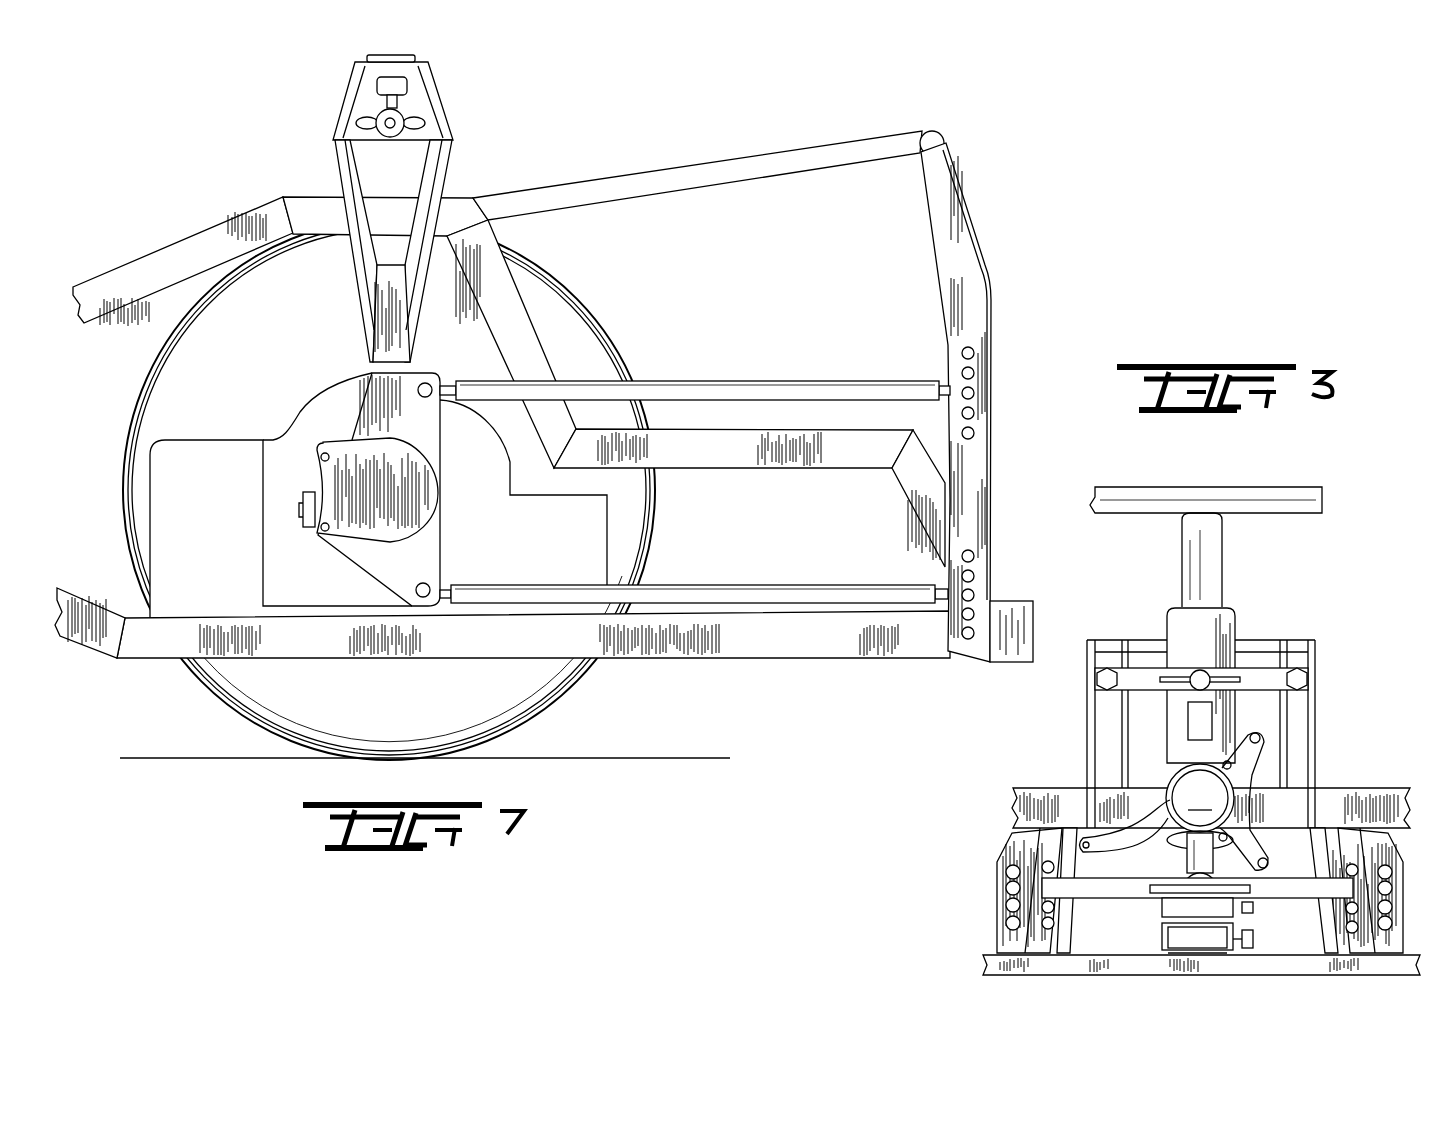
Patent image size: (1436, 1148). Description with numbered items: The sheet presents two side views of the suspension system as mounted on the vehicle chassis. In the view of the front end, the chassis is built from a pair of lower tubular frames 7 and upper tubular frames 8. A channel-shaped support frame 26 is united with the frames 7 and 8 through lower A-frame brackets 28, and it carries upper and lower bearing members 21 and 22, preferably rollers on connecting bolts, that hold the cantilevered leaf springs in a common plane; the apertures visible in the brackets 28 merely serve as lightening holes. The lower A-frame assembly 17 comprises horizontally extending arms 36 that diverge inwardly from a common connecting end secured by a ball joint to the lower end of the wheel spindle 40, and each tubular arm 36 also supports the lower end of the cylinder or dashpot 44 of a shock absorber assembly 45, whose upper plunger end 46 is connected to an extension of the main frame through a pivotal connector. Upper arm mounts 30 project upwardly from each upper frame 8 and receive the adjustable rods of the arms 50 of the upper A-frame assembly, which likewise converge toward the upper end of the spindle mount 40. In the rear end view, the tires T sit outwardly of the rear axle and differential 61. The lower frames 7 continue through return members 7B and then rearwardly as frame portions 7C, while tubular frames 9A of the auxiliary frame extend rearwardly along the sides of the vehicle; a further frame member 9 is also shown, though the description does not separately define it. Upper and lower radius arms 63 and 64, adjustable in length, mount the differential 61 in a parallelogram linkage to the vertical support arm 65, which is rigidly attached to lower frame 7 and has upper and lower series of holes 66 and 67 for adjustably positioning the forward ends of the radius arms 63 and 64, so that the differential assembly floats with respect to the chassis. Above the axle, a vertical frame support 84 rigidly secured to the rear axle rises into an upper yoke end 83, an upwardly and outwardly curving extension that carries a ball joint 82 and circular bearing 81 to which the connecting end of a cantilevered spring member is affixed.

In FIG. 7, the tubular frame 9A is at (213, 227).
In FIG. 7, the upper yoke end 83 is at (352, 93).
In FIG. 7, the ball joint 82 is at (410, 90).
In FIG. 7, the circular bearing 81 is at (423, 132).
In FIG. 7, the vertical frame support 84 is at (367, 378).
In FIG. 7, the differential 61 is at (205, 440).
In FIG. 7, the upper radius arm 63 is at (748, 381).
In FIG. 7, the lower radius arm 64 is at (718, 585).
In FIG. 7, the frame cross bar 9 is at (762, 469).
In FIG. 7, the vertical support arm 65 is at (994, 319).
In FIG. 7, the upper series of holes 66 is at (977, 372).
In FIG. 7, the lower series of holes 67 is at (972, 576).
In FIG. 7, the return member 7B is at (1006, 662).
In FIG. 7, the lower frame portion 7C is at (808, 660).
In FIG. 7, the tire T is at (590, 676).
In FIG. 3, the lower A-frame assembly 17 is at (1253, 487).
In FIG. 3, the upper plunger end 46 is at (1222, 557).
In FIG. 3, the shock absorber assembly 45 is at (1242, 597).
In FIG. 3, the cylinder or dashpot 44 is at (1237, 630).
In FIG. 3, the upper arm mount 30 is at (1317, 685).
In FIG. 3, the arm 50 is at (1140, 693).
In FIG. 3, the wheel spindle 40 is at (1174, 803).
In FIG. 3, the upper tubular frame 8 is at (1013, 808).
In FIG. 3, the lower A-frame bracket 28 is at (1012, 850).
In FIG. 3, the horizontally extending arm 36 is at (1080, 903).
In FIG. 3, the upper bearing member 21 is at (1173, 900).
In FIG. 3, the support frame 26 is at (1160, 938).
In FIG. 3, the lower tubular frame 7 is at (983, 965).
In FIG. 3, the lower bearing member 22 is at (1190, 953).